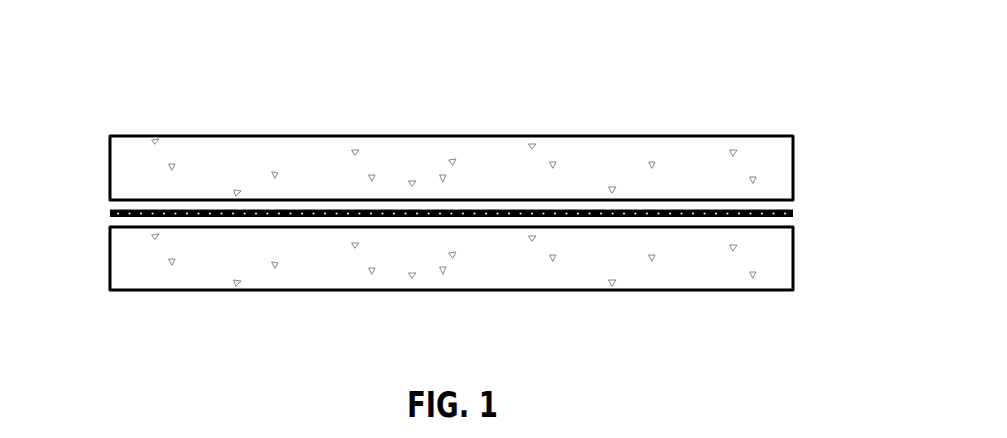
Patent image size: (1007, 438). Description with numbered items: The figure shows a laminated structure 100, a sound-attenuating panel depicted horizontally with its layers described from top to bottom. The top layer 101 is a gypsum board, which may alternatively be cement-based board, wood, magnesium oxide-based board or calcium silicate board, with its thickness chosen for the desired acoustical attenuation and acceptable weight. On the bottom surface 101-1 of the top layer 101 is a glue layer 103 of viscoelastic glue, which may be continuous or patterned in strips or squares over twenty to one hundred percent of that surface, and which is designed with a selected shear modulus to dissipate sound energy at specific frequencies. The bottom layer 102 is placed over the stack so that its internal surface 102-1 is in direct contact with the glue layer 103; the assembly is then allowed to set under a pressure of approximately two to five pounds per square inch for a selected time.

The laminated structure 100 is at (96, 134).
The top layer 101 is at (717, 170).
The bottom surface 101-1 is at (636, 200).
The bottom layer 102 is at (713, 252).
The internal surface 102-1 is at (635, 227).
The glue layer 103 is at (475, 217).